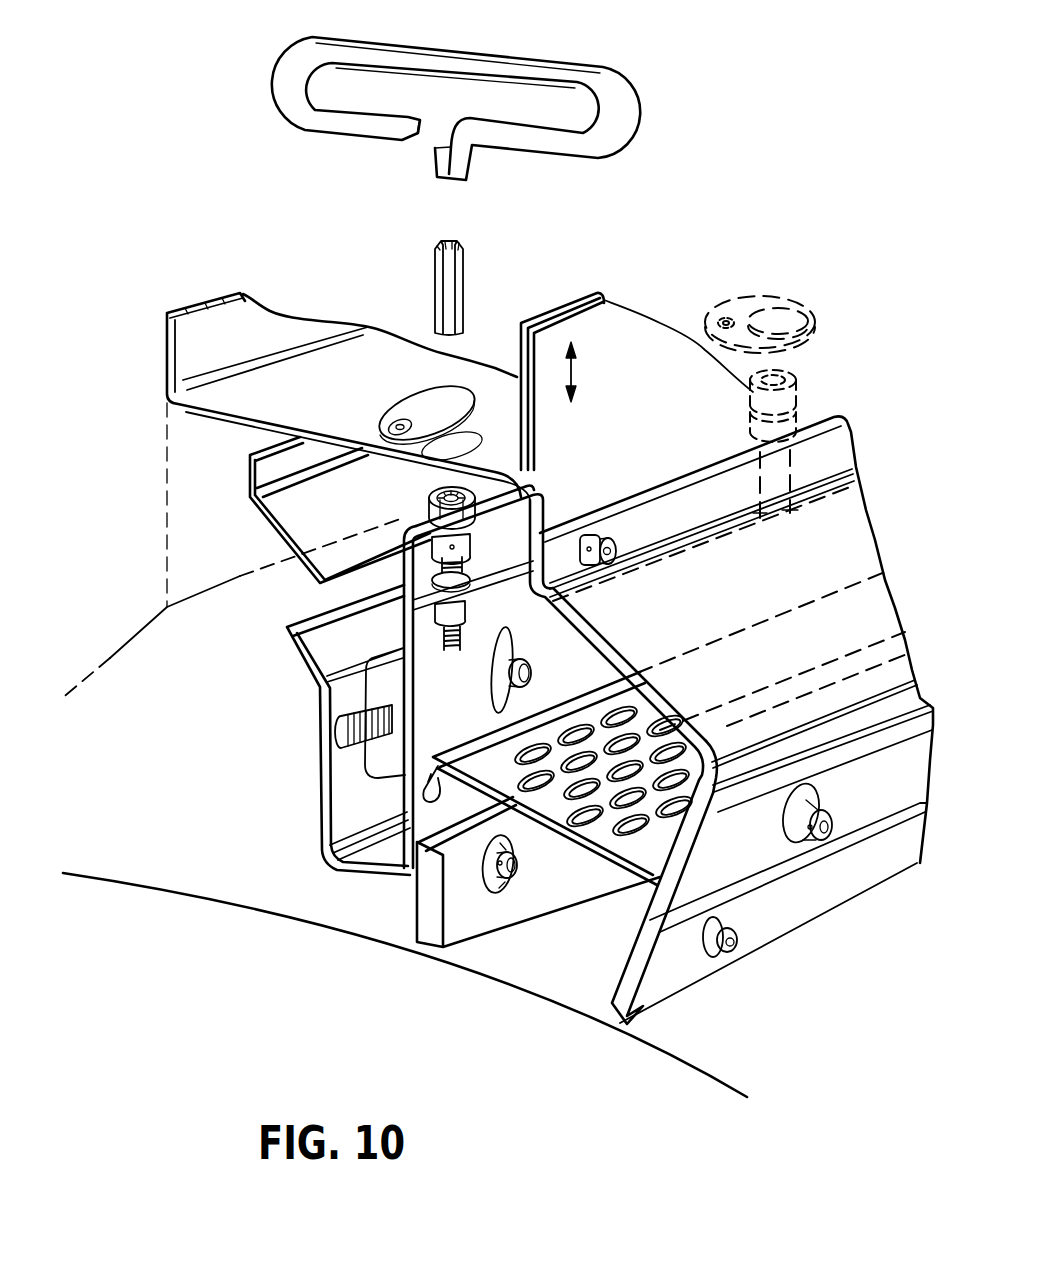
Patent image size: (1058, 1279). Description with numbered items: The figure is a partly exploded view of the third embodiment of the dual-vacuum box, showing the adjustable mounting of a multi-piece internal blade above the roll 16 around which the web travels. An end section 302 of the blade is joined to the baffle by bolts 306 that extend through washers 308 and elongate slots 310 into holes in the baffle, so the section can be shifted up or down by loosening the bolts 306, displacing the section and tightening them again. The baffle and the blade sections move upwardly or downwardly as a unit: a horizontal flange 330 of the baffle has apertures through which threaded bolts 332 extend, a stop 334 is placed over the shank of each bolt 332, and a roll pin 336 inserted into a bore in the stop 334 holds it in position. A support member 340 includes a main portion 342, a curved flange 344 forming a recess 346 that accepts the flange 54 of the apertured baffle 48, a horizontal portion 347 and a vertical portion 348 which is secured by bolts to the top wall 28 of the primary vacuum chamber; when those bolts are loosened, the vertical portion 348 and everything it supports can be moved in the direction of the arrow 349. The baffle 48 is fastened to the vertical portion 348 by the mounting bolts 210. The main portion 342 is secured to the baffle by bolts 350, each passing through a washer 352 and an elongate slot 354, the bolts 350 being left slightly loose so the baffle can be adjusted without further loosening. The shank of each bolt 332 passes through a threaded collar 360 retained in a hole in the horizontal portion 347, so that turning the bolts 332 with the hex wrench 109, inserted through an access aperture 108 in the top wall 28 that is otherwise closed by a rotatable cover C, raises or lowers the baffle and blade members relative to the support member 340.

The hex wrench 109 is at (523, 57).
The access aperture 108 is at (473, 437).
The rotatable cover C is at (428, 400).
The top wall 28 is at (292, 405).
The vertical portion 348 is at (682, 409).
The arrow 349 is at (578, 387).
The mounting bolts 210 is at (620, 544).
The baffle 48 is at (743, 602).
The horizontal flange 330 is at (561, 614).
The support member 340 is at (487, 710).
The horizontal portion 347 is at (407, 599).
The threaded bolts 332 is at (430, 517).
The stop 334 is at (471, 579).
The roll pin 336 is at (403, 520).
The threaded collar 360 is at (403, 582).
The flange 54 is at (431, 764).
The recess 346 is at (420, 793).
The bolts 350 is at (495, 673).
The elongate slot 354 is at (507, 626).
The washer 352 is at (513, 636).
The main portion 342 is at (598, 689).
The curved flange 344 is at (574, 770).
The end section 302 is at (460, 922).
The bolts 306 is at (518, 866).
The washers 308 is at (505, 887).
The elongate slots 310 is at (501, 891).
The roll 16 is at (501, 1058).